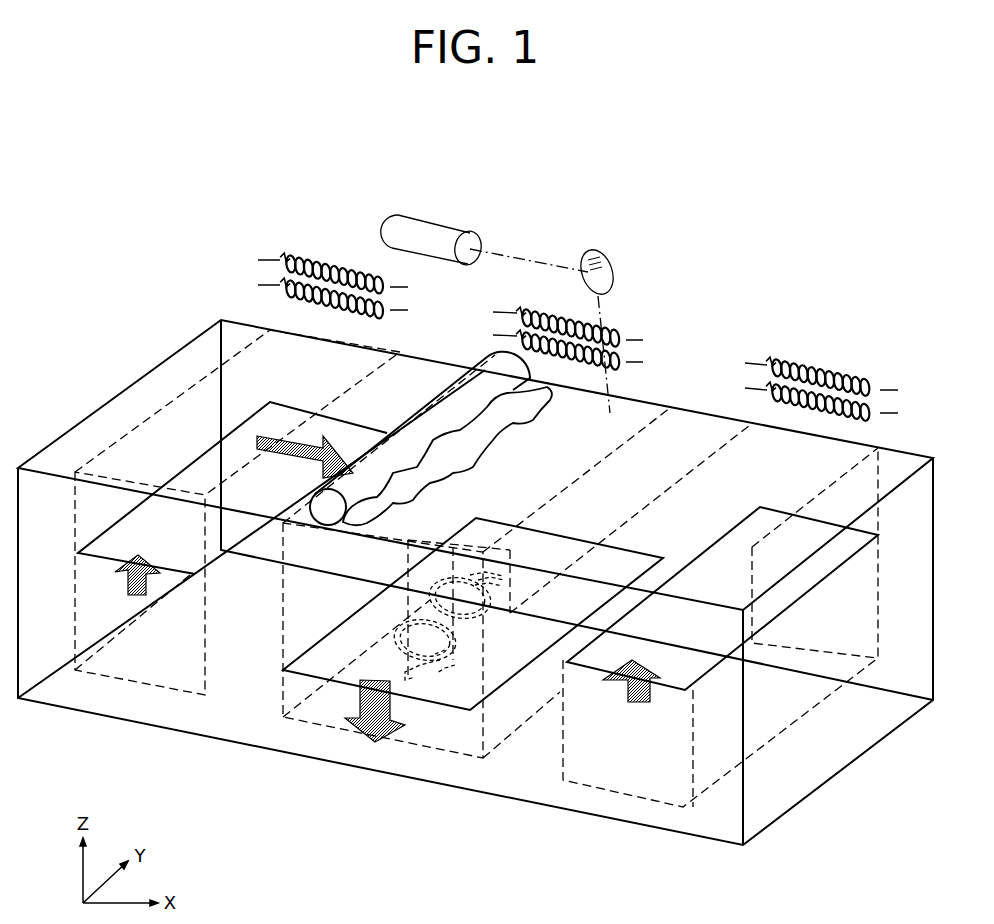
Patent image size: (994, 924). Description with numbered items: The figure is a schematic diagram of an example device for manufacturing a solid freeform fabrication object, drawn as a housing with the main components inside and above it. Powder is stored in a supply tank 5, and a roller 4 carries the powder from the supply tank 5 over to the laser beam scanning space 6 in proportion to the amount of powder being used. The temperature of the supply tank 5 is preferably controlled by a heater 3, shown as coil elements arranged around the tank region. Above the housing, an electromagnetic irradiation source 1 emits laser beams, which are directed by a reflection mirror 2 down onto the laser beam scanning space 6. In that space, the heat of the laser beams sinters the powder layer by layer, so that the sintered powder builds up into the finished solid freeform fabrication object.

The electromagnetic irradiation source 1 is at (423, 227).
The reflection mirror 2 is at (598, 251).
The heater 3 is at (258, 260).
The roller 4 is at (423, 412).
The supply tank 5 is at (214, 670).
The laser beam scanning space 6 is at (303, 710).